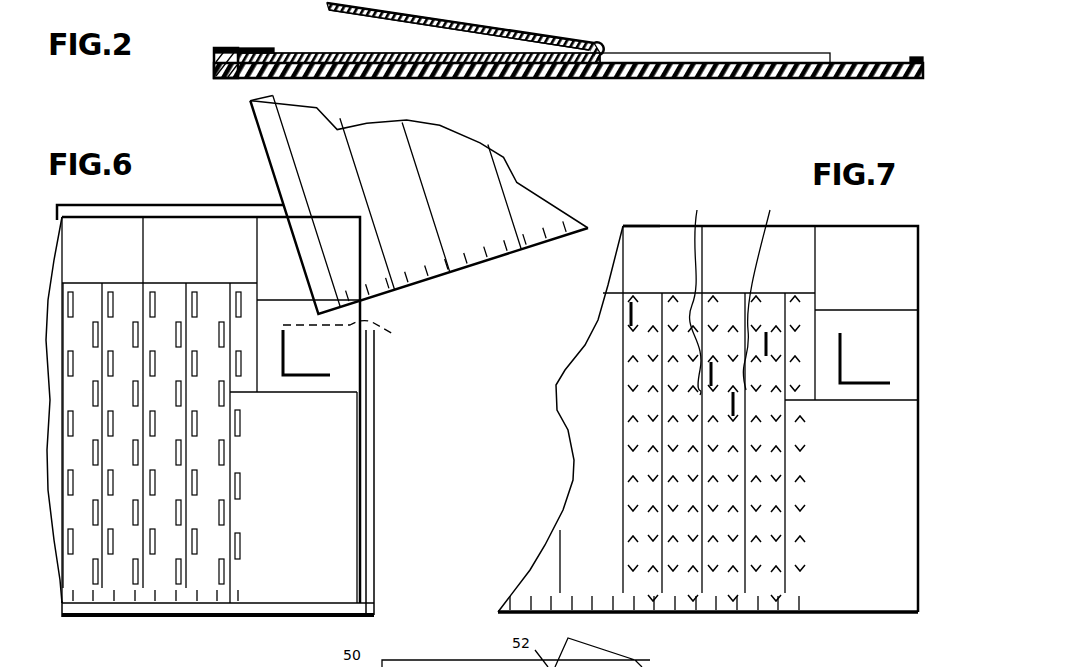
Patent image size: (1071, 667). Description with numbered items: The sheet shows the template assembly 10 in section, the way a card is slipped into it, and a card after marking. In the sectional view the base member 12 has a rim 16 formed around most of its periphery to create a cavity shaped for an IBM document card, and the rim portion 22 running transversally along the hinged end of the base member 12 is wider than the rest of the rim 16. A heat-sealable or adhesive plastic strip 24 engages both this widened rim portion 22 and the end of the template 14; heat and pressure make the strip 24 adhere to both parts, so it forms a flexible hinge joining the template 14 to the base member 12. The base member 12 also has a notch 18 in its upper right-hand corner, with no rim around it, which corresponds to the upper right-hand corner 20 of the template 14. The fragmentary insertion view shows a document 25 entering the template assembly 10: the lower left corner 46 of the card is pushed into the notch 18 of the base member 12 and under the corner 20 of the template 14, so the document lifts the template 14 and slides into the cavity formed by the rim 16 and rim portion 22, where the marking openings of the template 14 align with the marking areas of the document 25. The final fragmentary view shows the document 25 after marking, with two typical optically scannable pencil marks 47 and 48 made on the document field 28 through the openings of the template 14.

In FIG. 6, the template assembly 10 is at (141, 622).
In FIG. 2, the base member 12 is at (728, 72).
In FIG. 2, the template 14 is at (513, 27).
In FIG. 6, the template 14 is at (183, 217).
In FIG. 2, the rim 16 is at (915, 57).
In FIG. 6, the notch 18 is at (352, 335).
In FIG. 6, the upper right-hand corner 20 is at (345, 358).
In FIG. 2, the rim portion 22 is at (214, 62).
In FIG. 2, the plastic strip 24 is at (227, 48).
In FIG. 6, the document 25 is at (260, 133).
In FIG. 7, the document 25 is at (655, 226).
In FIG. 7, the document field 28 is at (722, 226).
In FIG. 6, the lower left corner 46 is at (400, 290).
In FIG. 7, the optically scannable pencil mark 47 is at (697, 293).
In FIG. 7, the optically scannable pencil mark 48 is at (761, 291).